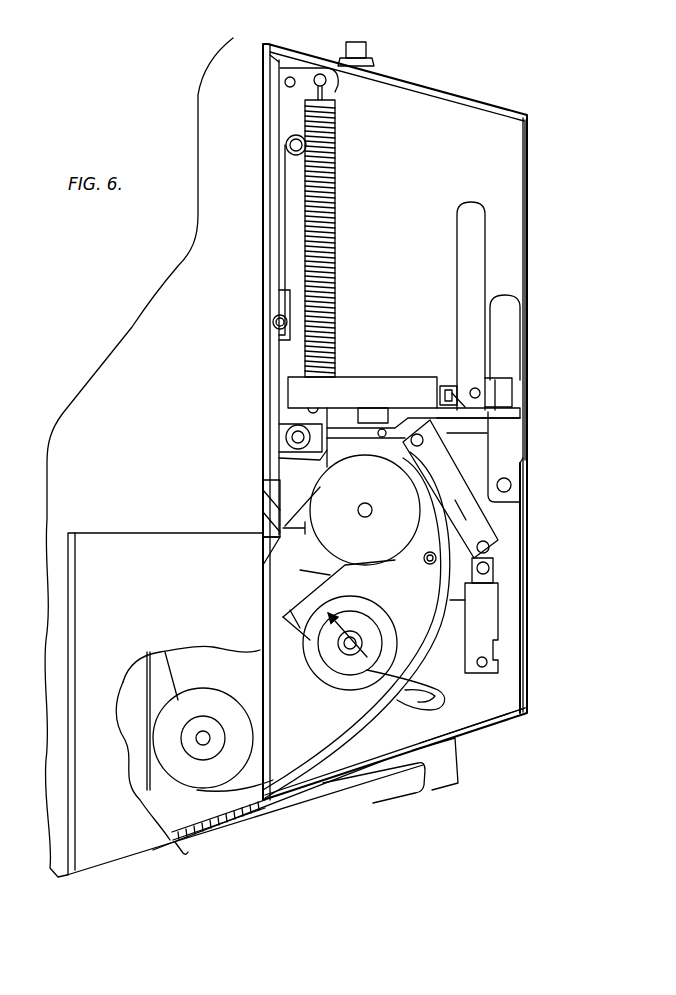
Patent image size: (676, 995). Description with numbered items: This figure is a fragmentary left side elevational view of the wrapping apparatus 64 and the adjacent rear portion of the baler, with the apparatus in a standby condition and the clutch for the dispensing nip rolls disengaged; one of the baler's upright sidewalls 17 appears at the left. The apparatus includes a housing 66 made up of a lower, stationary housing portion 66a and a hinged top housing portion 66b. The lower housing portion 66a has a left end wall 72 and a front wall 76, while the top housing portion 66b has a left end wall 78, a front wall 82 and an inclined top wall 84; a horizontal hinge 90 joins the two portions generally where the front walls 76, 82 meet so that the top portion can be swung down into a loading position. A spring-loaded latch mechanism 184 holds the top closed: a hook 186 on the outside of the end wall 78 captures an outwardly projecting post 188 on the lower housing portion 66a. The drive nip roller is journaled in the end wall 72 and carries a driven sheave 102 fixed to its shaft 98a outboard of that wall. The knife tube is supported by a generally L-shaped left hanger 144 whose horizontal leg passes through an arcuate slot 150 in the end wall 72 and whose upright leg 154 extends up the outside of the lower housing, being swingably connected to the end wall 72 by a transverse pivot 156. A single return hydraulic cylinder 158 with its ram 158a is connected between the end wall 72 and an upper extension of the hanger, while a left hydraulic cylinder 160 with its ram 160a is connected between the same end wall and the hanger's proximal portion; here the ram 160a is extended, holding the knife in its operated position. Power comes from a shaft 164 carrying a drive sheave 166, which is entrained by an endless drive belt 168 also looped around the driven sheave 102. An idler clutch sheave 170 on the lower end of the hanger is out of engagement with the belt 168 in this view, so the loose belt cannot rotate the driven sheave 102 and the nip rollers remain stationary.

The sidewall 17 is at (138, 322).
The wrapping apparatus 64 is at (510, 97).
The housing 66 is at (540, 284).
The lower housing portion 66a is at (532, 694).
The top housing portion 66b is at (530, 327).
The left end wall 72 is at (510, 665).
The front wall 76 is at (527, 558).
The left end wall 78 is at (508, 169).
The front wall 82 is at (528, 215).
The inclined top wall 84 is at (406, 78).
The horizontal hinge 90 is at (512, 488).
The shaft 98a is at (372, 508).
The driven sheave 102 is at (313, 490).
The left hanger 144 is at (294, 592).
The arcuate slot 150 is at (415, 704).
The upright leg 154 is at (363, 576).
The transverse pivot 156 is at (426, 562).
The hydraulic cylinder 158 is at (492, 623).
The ram 158a is at (463, 575).
The left hydraulic cylinder 160 is at (447, 475).
The ram 160a is at (477, 530).
The shaft 164 is at (207, 735).
The drive sheave 166 is at (173, 768).
The drive belt 168 is at (343, 738).
The idler clutch sheave 170 is at (320, 668).
The latch mechanism 184 is at (440, 353).
The hook 186 is at (283, 392).
The post 188 is at (286, 444).